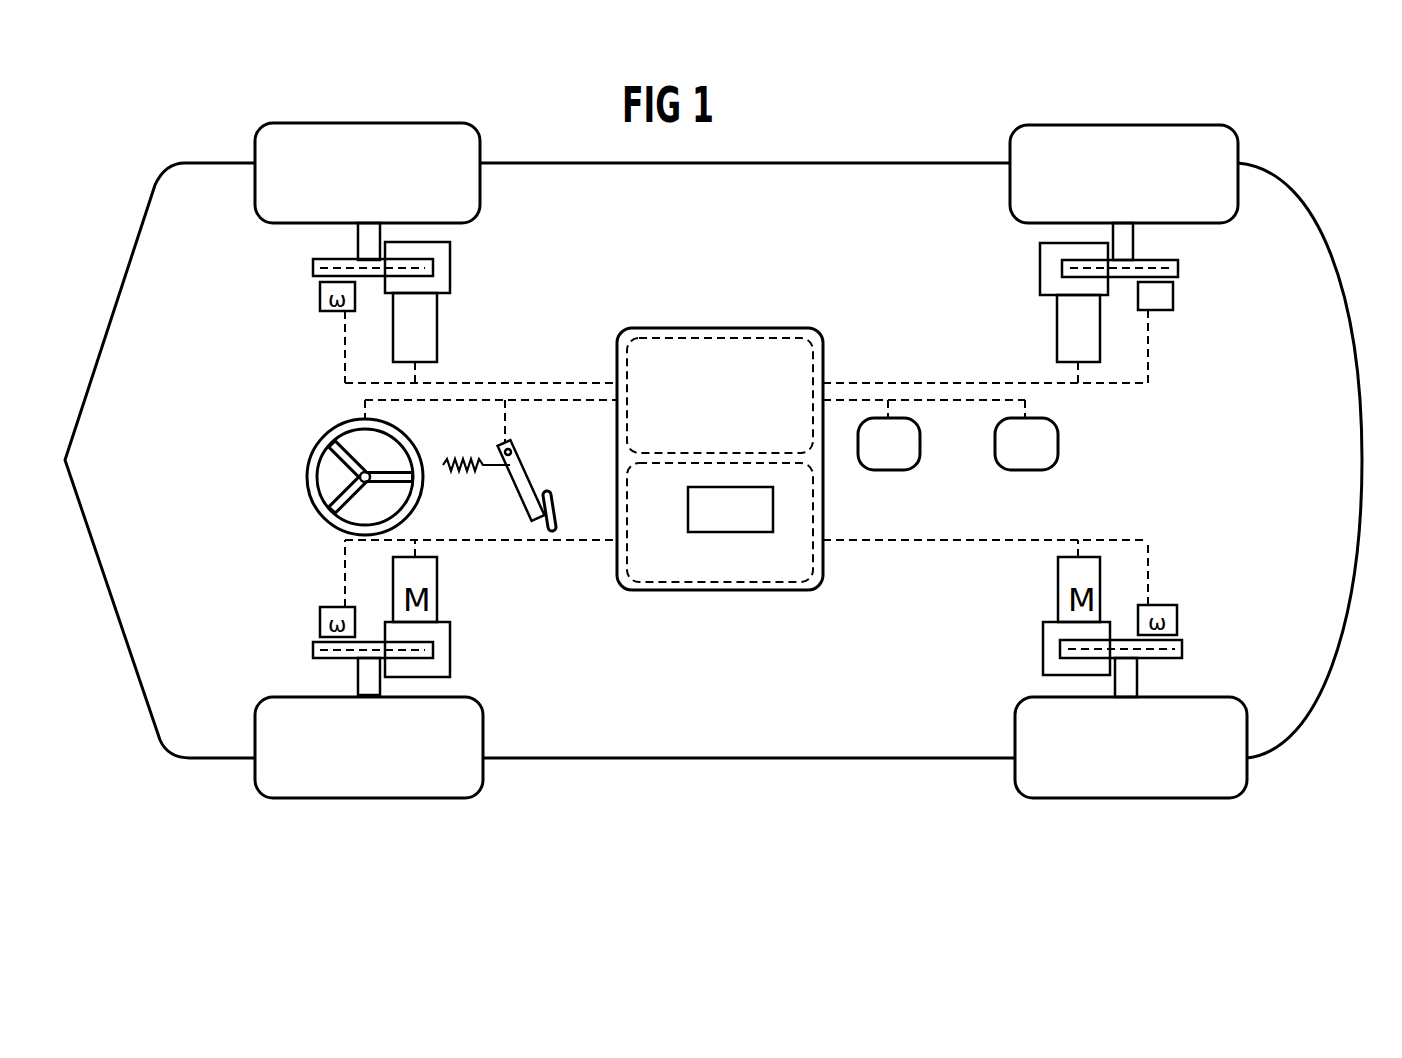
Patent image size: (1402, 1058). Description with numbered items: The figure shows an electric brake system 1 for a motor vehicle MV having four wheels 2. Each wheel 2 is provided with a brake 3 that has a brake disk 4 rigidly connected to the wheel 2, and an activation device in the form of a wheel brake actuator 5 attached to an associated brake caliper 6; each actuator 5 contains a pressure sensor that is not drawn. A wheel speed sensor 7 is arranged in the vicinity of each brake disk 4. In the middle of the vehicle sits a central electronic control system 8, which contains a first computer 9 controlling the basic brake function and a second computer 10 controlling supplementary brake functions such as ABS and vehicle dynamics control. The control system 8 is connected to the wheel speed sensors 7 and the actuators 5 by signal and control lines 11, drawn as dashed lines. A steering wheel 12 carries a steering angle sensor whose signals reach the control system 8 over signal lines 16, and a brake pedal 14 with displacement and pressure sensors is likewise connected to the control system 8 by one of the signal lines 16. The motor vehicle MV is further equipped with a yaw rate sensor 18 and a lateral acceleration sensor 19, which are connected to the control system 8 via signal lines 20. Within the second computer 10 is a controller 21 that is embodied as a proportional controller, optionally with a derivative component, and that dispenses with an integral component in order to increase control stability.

The brake system 1 is at (800, 288).
The motor vehicle MV is at (903, 178).
The wheel 2 is at (480, 192).
The brake 3 is at (411, 292).
The brake disk 4 is at (313, 268).
The wheel brake actuator 5 is at (1057, 327).
The brake caliper 6 is at (1040, 271).
The wheel speed sensor 7 is at (1190, 328).
The central electronic control system 8 is at (737, 458).
The first computer 9 is at (675, 322).
The second computer 10 is at (676, 596).
The signal and control lines 11 is at (575, 383).
The steering wheel 12 is at (307, 480).
The brake pedal 14 is at (500, 510).
The signal lines 16 is at (570, 402).
The yaw rate sensor 18 is at (888, 470).
The lateral acceleration sensor 19 is at (1058, 444).
The signal lines 20 is at (958, 402).
The controller 21 is at (742, 532).